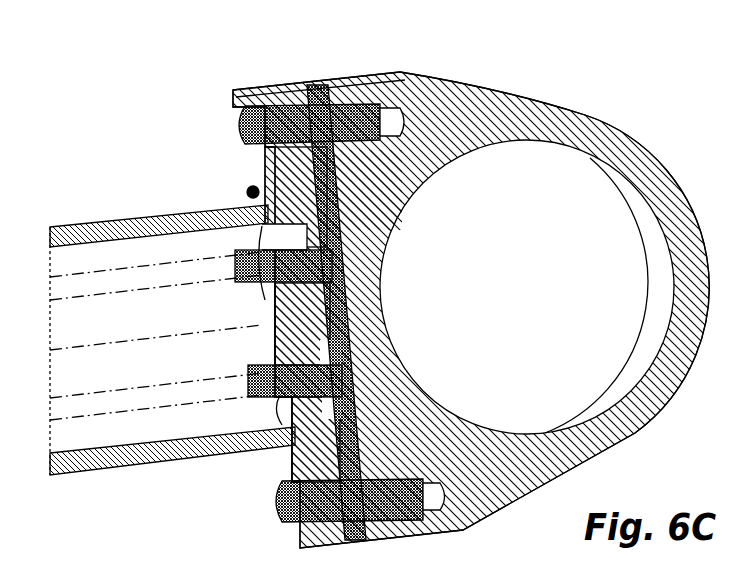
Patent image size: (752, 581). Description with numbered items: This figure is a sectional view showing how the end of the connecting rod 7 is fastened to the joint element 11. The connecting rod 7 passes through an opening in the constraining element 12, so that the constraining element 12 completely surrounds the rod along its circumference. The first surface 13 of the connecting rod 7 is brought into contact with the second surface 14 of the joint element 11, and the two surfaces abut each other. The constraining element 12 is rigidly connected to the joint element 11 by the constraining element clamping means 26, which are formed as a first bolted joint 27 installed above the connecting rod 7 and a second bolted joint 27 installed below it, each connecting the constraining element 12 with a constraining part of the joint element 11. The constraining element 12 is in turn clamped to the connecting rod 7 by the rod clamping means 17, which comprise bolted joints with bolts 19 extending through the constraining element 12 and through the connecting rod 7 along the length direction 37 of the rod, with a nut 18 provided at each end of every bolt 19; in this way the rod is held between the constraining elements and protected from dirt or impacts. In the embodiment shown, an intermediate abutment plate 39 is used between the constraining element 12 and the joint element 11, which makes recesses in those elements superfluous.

The connecting rod 7 is at (142, 200).
The joint element 11 is at (672, 140).
The constraining element 12 is at (260, 80).
The first surface 13 is at (402, 227).
The second surface 14 is at (247, 190).
The rod clamping means 17 is at (355, 192).
The nut 18 is at (342, 258).
The bolt 19 is at (208, 395).
The constraining element clamping means 26 is at (350, 68).
The bolted joint 27 is at (230, 127).
The length direction 37 is at (200, 335).
The intermediate abutment plate 39 is at (304, 80).